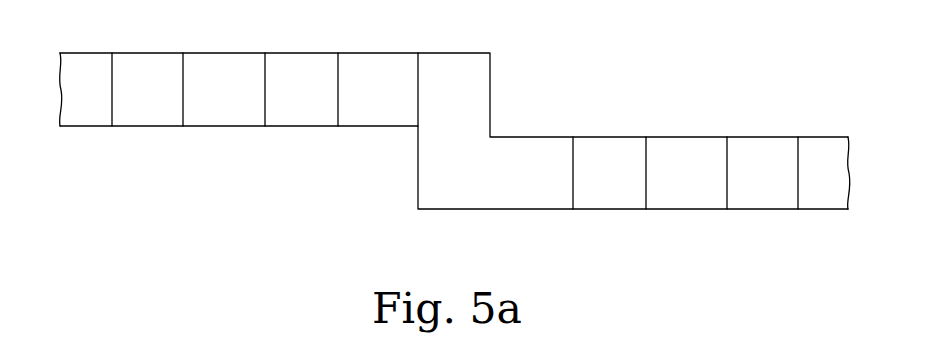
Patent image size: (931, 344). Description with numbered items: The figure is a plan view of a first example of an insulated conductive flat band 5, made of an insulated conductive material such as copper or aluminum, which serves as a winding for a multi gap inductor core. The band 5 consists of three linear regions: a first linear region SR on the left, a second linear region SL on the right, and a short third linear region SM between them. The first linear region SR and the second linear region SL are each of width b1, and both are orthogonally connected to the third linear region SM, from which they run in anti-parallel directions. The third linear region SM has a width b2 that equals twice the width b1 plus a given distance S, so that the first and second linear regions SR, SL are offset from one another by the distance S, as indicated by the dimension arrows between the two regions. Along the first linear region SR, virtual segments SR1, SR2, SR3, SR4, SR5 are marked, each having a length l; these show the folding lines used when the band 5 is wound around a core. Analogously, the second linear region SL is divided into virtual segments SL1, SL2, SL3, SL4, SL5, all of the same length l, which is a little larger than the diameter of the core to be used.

The insulated conductive flat band 5 is at (819, 194).
The first linear region SR is at (415, 199).
The virtual segment of the first linear region SR1 is at (381, 78).
The virtual segment of the first linear region SR2 is at (308, 78).
The virtual segment of the first linear region SR3 is at (226, 78).
The virtual segment of the first linear region SR4 is at (155, 78).
The virtual segment of the first linear region SR5 is at (82, 78).
The second linear region SL is at (845, 78).
The virtual segment of the second linear region SL1 is at (519, 149).
The virtual segment of the second linear region SL2 is at (600, 149).
The virtual segment of the second linear region SL3 is at (672, 149).
The virtual segment of the second linear region SL4 is at (754, 149).
The virtual segment of the second linear region SL5 is at (826, 149).
The third linear region SM is at (479, 63).
The width of the first and second linear regions b1 is at (62, 53).
The width of the third linear region b2 is at (468, 209).
The distance S is at (478, 138).
The length of a virtual segment l is at (338, 140).